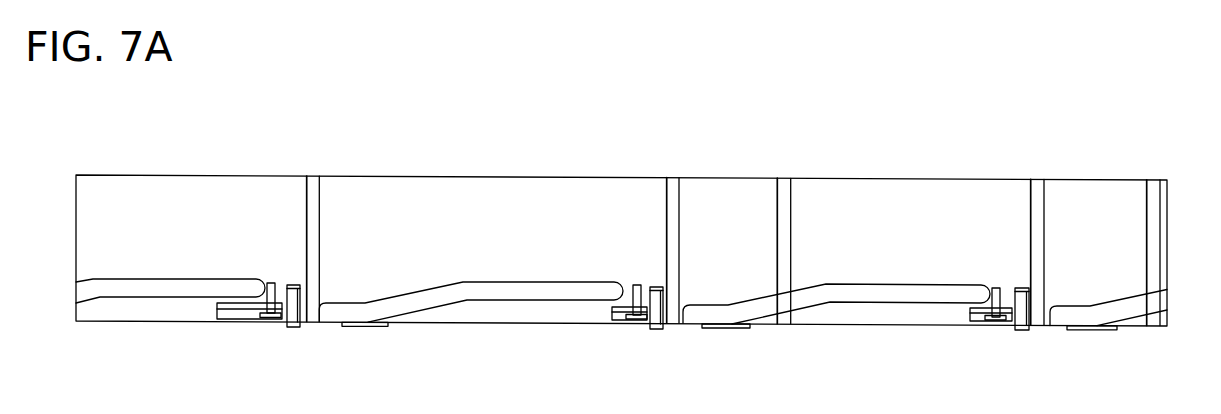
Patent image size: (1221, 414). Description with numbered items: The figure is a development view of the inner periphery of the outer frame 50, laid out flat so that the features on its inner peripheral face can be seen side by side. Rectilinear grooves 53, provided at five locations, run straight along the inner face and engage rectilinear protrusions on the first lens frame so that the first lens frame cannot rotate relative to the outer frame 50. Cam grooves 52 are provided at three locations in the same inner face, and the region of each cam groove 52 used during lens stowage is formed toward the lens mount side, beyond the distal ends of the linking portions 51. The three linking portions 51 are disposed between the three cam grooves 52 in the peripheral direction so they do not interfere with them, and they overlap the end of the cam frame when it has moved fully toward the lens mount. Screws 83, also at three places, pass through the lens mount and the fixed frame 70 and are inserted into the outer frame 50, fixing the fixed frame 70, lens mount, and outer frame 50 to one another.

The outer frame 50 is at (232, 149).
The linking portion 51 is at (302, 322).
The cam groove 52 is at (121, 287).
The rectilinear groove 53 is at (312, 187).
The fixed frame 70 is at (250, 310).
The screw 83 is at (271, 288).